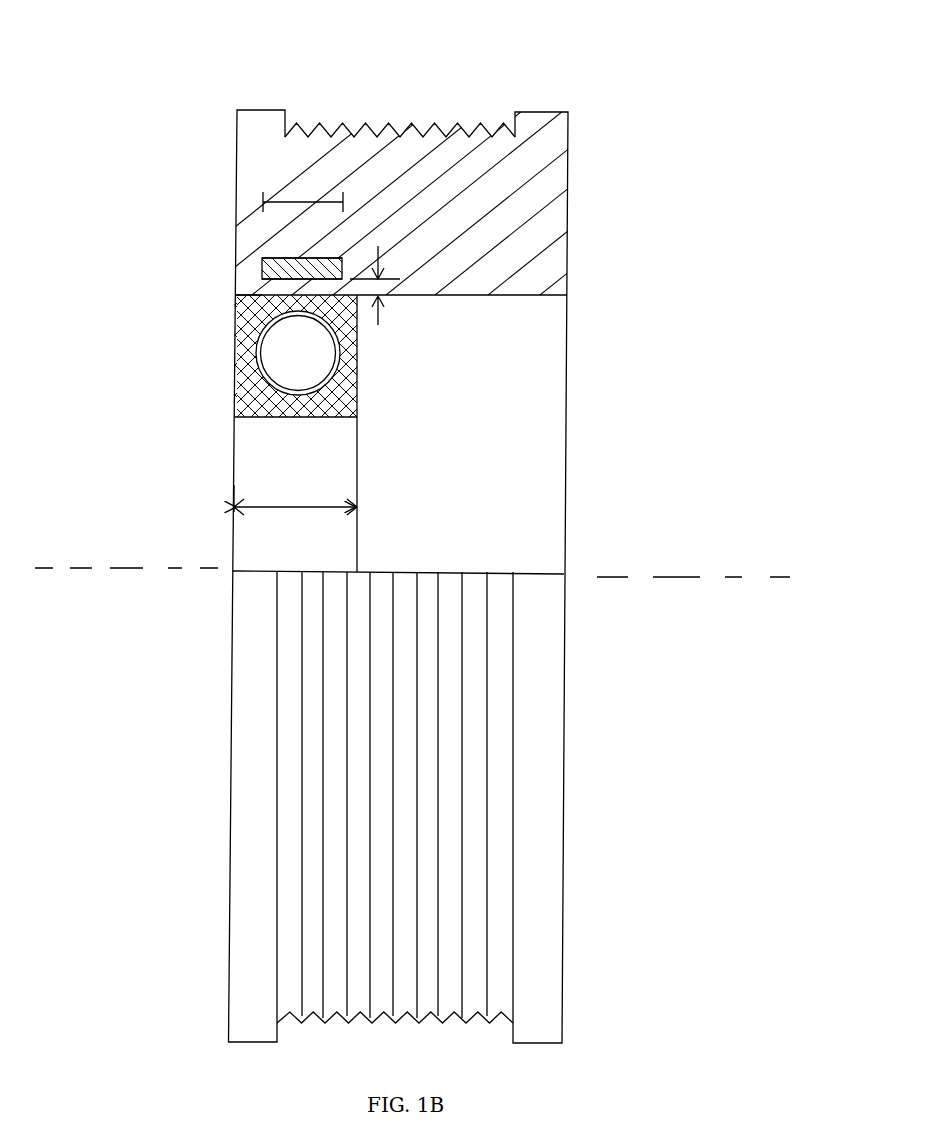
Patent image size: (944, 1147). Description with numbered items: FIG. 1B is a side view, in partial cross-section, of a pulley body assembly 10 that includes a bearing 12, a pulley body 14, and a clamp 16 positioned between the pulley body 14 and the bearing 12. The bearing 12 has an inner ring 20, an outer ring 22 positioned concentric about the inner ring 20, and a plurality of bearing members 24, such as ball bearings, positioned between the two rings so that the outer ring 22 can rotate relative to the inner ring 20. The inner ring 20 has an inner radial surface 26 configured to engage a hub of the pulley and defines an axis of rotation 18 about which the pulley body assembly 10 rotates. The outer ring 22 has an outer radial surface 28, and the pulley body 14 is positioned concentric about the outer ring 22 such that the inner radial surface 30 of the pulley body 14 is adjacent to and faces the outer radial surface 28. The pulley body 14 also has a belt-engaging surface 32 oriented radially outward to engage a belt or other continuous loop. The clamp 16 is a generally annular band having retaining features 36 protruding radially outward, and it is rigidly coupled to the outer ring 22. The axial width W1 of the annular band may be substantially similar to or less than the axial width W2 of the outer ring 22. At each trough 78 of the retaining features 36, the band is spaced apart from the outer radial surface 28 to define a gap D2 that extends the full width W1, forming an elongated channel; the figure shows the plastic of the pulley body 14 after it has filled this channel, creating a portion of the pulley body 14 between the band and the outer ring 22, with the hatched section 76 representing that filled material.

The pulley body assembly 10 is at (662, 64).
The bearing 12 is at (208, 348).
The pulley body 14 is at (545, 152).
The clamp 16 is at (246, 258).
The axis of rotation 18 is at (670, 573).
The inner ring 20 is at (345, 400).
The outer ring 22 is at (357, 340).
The bearing members 24 is at (298, 353).
The inner radial surface 26 is at (270, 419).
The outer radial surface 28 is at (236, 281).
The inner radial surface 30 is at (537, 297).
The belt-engaging surface 32 is at (355, 135).
The retaining features 36 is at (262, 257).
The spacer strip 76 is at (262, 257).
The trough 78 is at (240, 300).
The axial width W1 is at (303, 196).
The axial width W2 is at (295, 513).
The depth D2 is at (390, 285).